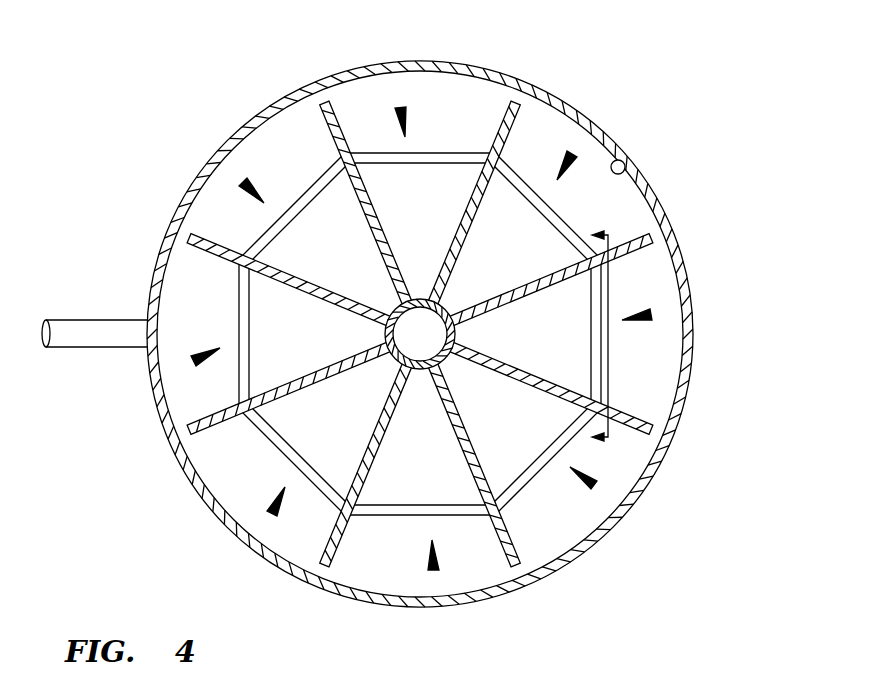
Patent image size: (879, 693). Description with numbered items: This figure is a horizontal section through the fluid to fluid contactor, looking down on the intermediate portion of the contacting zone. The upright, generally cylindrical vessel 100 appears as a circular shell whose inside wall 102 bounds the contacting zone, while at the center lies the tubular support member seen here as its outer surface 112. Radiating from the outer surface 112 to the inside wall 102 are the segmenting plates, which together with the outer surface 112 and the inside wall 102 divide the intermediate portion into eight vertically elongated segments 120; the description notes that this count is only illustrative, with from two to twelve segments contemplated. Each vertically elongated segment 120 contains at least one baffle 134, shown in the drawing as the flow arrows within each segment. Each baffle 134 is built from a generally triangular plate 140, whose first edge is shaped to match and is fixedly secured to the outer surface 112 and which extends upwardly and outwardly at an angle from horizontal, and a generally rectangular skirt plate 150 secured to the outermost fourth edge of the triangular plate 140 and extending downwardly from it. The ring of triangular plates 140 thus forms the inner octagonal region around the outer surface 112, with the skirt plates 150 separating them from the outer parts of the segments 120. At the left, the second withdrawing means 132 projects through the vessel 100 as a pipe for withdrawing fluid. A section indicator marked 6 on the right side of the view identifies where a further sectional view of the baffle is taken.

The generally cylindrical vessel 100 is at (482, 72).
The inside wall 102 is at (623, 162).
The outer surface 112 is at (420, 298).
The vertically elongated segments 120 is at (419, 118).
The second withdrawing means 132 is at (68, 318).
The baffle 134 is at (401, 112).
The generally triangular plate 140 is at (399, 218).
The generally rectangular skirt plate 150 is at (343, 80).
The section line 6- 6 is at (599, 336).